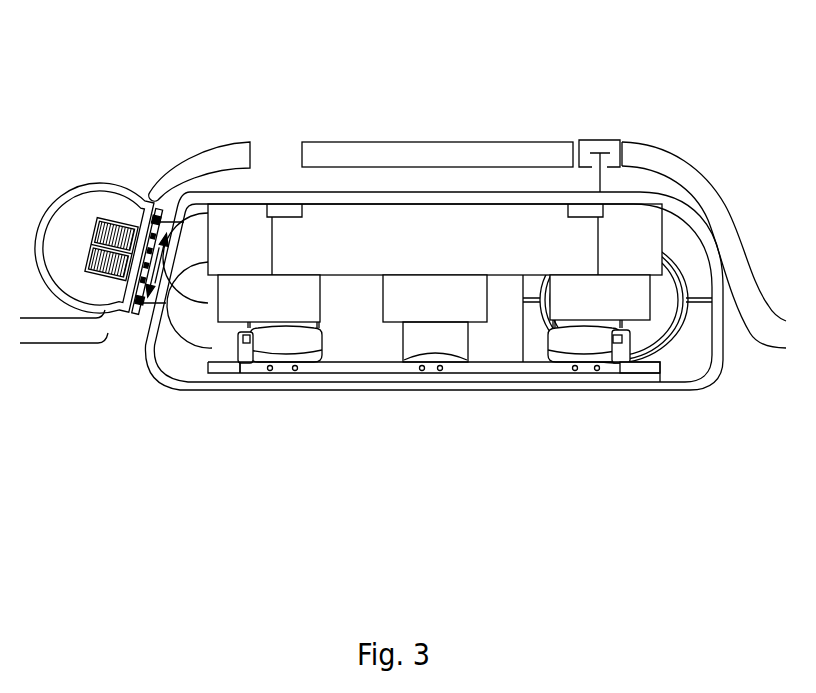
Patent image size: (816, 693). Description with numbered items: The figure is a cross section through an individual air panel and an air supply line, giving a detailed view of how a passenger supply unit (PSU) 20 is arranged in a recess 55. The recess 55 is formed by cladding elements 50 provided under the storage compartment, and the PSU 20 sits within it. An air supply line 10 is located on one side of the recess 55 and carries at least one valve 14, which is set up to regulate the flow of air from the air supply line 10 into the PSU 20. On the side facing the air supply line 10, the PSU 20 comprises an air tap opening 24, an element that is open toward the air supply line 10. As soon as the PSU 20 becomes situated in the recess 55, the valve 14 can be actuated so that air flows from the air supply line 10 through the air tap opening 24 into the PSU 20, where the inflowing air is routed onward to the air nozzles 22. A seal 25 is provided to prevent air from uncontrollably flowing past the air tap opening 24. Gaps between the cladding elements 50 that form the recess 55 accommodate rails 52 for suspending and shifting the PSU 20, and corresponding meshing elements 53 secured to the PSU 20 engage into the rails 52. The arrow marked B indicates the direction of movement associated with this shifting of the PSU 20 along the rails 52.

The air supply line 10 is at (63, 193).
The valve 14 is at (108, 226).
The passenger supply unit (PSU) 20 is at (697, 393).
The air nozzles 22 is at (442, 343).
The air tap opening 24 is at (185, 302).
The seal 25 is at (133, 303).
The cladding elements 50 is at (703, 180).
The rails 52 is at (600, 139).
The meshing elements 53 is at (593, 150).
The recess 55 is at (417, 184).
The sliding direction B is at (181, 263).